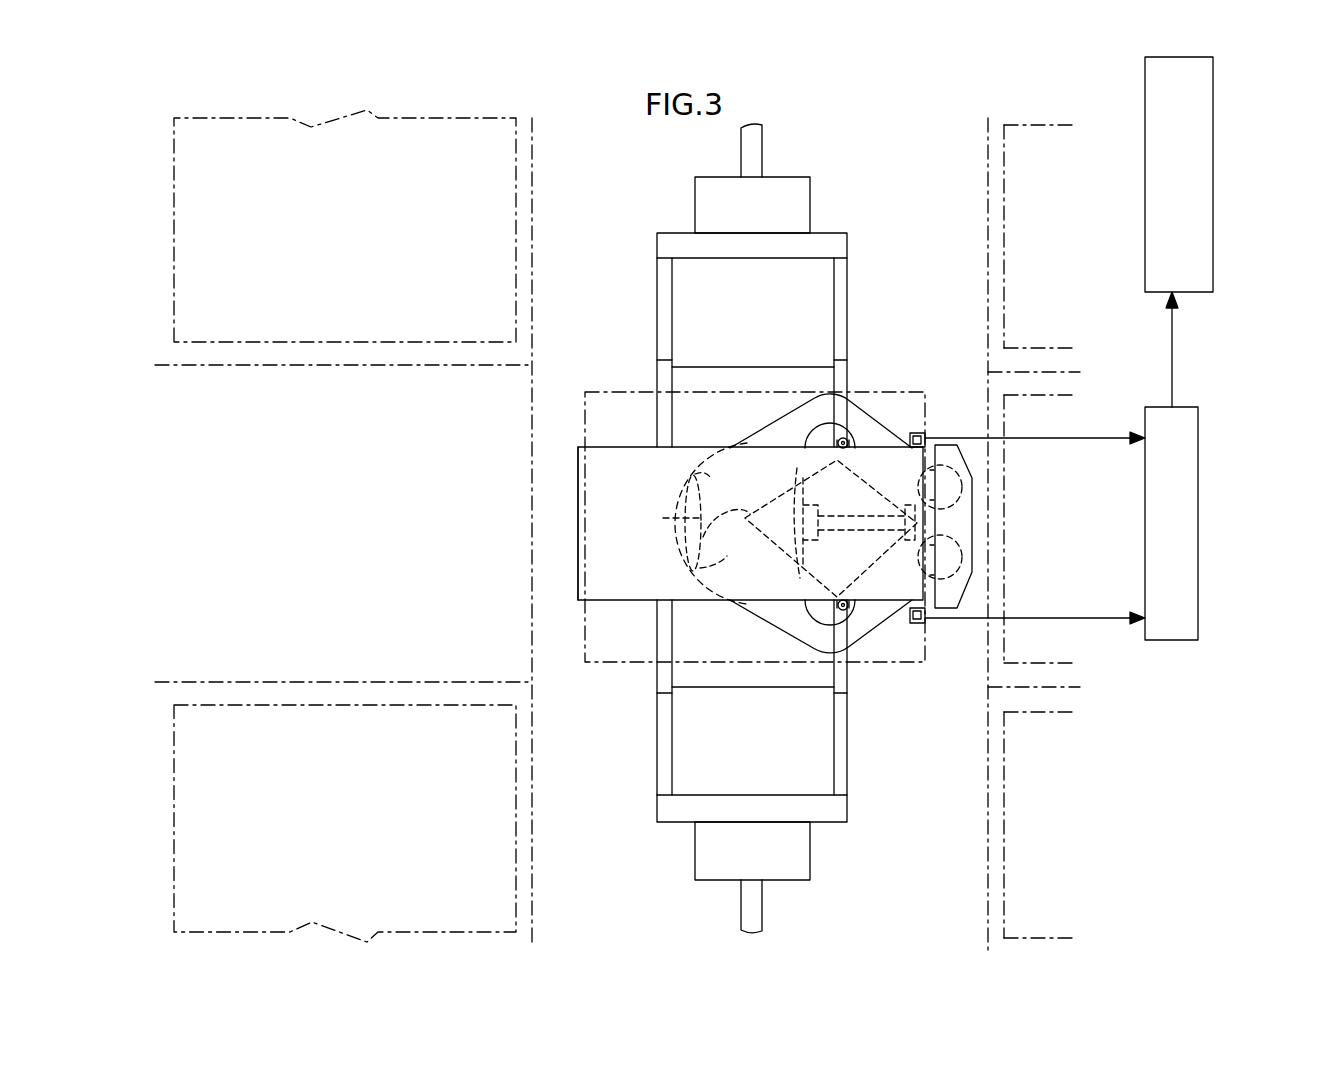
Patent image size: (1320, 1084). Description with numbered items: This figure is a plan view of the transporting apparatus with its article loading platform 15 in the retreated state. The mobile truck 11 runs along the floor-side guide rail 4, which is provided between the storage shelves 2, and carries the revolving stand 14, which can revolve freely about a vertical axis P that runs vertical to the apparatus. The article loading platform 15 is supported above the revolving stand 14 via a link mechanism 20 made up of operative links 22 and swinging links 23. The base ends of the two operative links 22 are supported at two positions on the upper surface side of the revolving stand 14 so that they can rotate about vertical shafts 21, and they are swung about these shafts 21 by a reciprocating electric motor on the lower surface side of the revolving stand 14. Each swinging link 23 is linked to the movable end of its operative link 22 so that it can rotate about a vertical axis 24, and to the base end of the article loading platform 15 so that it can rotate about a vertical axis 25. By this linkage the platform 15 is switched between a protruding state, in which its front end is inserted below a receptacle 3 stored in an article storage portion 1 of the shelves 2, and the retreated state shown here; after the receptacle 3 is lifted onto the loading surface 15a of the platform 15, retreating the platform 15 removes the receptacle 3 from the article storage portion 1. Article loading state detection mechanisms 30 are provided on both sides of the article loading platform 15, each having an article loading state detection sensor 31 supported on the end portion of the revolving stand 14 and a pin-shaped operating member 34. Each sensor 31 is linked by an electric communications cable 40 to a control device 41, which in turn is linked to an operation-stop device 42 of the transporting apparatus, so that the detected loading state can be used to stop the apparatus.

The article storage portion 1 is at (343, 523).
The storage shelves 2 is at (534, 232).
The receptacle 3 is at (186, 277).
The floor-side guide rail 4 is at (740, 905).
The mobile truck 11 is at (797, 848).
The revolving stand 14 is at (657, 740).
The article loading platform 15 is at (578, 537).
The loading surface 15a is at (613, 493).
The link mechanism 20 is at (733, 438).
The vertical shafts 21 is at (725, 490).
The operative links 22 is at (777, 428).
The swinging links 23 is at (990, 470).
The vertical axis 24 is at (830, 425).
The vertical axis 25 is at (1022, 523).
The article loading state detection mechanism 30 is at (851, 529).
The article loading state detection sensor 31 is at (903, 418).
The pin-shaped operating member 34 is at (846, 438).
The electric communications cable 40 is at (1065, 437).
The control device 41 is at (1198, 467).
The operation-stop device 42 is at (1213, 212).
The axis P is at (690, 520).